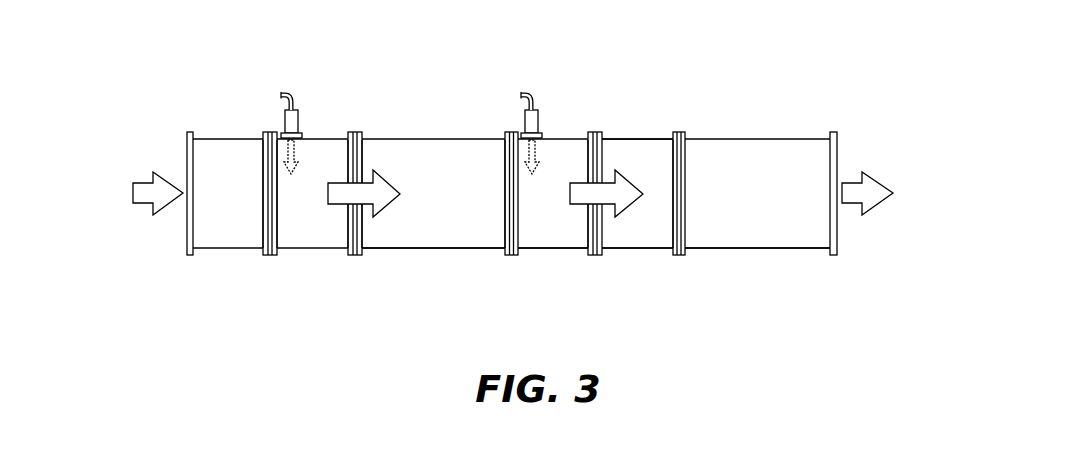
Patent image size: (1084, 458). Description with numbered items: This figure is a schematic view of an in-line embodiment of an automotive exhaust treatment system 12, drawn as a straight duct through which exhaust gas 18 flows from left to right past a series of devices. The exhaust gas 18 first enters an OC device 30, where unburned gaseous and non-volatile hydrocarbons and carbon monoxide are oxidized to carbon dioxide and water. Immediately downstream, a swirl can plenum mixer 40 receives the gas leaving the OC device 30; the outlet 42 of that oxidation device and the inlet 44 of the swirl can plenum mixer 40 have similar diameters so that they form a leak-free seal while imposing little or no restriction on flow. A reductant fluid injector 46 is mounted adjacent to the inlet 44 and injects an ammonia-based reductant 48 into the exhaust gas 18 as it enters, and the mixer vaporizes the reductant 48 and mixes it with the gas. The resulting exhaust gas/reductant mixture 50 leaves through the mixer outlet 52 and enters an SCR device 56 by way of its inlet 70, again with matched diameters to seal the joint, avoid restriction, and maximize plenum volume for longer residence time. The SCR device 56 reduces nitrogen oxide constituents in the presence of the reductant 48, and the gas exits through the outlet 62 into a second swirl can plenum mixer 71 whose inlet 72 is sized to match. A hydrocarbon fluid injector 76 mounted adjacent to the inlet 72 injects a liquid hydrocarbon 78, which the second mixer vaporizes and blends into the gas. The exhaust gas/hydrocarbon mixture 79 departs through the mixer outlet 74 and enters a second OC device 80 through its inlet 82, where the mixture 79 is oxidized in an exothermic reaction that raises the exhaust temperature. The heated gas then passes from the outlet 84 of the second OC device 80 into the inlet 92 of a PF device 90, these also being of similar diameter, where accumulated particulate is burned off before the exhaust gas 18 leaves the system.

The exhaust treatment system 12 is at (690, 68).
The exhaust gas 18 is at (146, 185).
The OC device 30 is at (220, 251).
The swirl can plenum mixer 40 is at (290, 251).
The outlet of the DOC device 42 is at (277, 215).
The inlet of the swirl can plenum mixer 44 is at (268, 160).
The reductant fluid injector 46 is at (287, 122).
The ammonia based reductant 48 is at (300, 152).
The exhaust gas/reductant mixture 50 is at (404, 191).
The mixer outlet 52 is at (361, 220).
The SCR device 56 is at (438, 251).
The outlet of the SCR device 62 is at (518, 232).
The inlet of the SCR device 70 is at (352, 233).
The second swirl can plenum mixer 71 is at (567, 251).
The inlet of the second swirl can plenum mixer 72 is at (506, 217).
The mixer outlet 74 is at (596, 163).
The hydrocarbon fluid injector 76 is at (535, 122).
The liquid hydrocarbon 78 is at (532, 160).
The exhaust gas/hydrocarbon mixture 79 is at (637, 180).
The second OC device 80 is at (636, 251).
The inlet of the second OC device 82 is at (588, 235).
The outlet of the second OC device 84 is at (687, 224).
The PF device 90 is at (763, 251).
The inlet of the PF device 92 is at (672, 180).